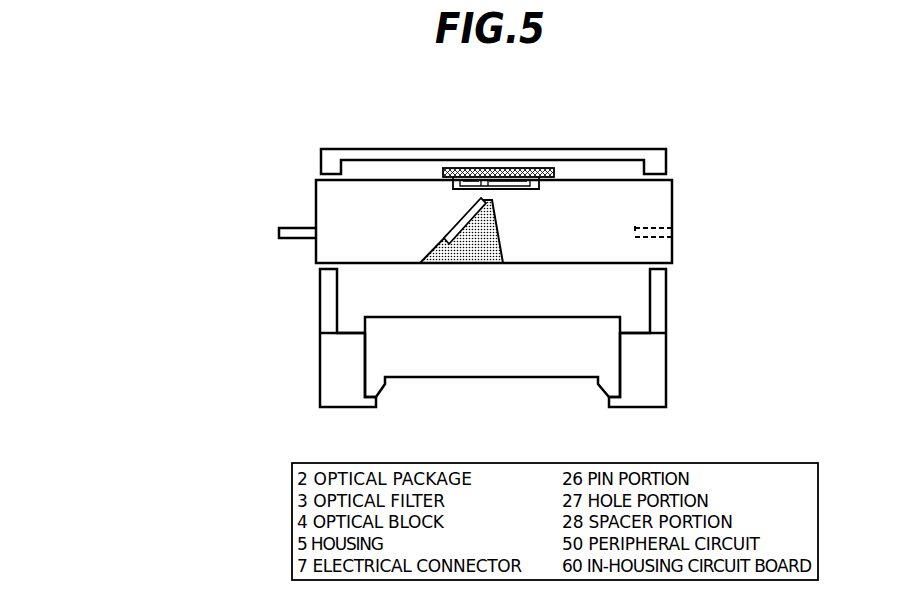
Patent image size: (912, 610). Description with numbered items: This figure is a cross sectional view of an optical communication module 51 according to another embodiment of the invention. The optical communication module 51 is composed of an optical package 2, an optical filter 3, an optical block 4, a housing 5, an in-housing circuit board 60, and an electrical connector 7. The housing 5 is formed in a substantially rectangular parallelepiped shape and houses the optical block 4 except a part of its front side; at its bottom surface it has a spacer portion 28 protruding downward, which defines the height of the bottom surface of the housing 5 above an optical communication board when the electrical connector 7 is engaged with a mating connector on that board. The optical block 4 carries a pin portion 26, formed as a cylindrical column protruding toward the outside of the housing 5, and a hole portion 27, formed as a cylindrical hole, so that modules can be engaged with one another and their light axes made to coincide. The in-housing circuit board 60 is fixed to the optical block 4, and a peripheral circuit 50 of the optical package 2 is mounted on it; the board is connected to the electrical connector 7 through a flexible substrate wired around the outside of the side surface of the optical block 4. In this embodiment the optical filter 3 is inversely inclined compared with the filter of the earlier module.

The optical communication module 51 is at (248, 113).
The optical package 2 is at (452, 191).
The optical filter 3 is at (449, 236).
The optical block 4 is at (376, 187).
The housing 5 is at (352, 149).
The electrical connector 7 is at (411, 378).
The pin portion 26 is at (292, 239).
The hole portion 27 is at (657, 240).
The spacer portion 28 is at (660, 370).
The peripheral circuit 50 is at (523, 190).
The in-housing circuit board 60 is at (496, 168).